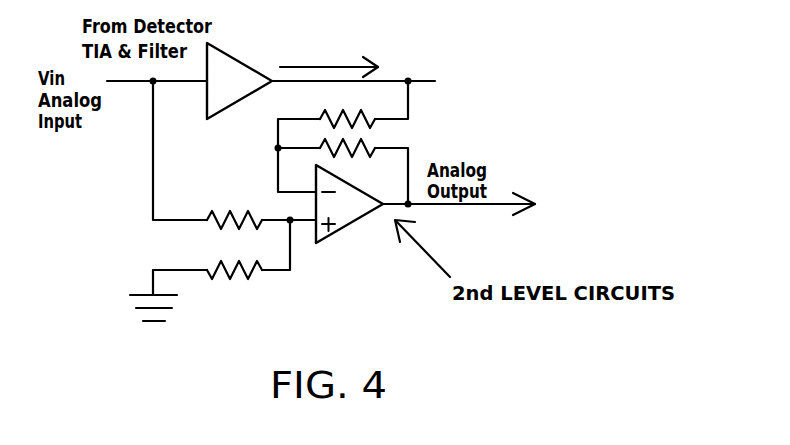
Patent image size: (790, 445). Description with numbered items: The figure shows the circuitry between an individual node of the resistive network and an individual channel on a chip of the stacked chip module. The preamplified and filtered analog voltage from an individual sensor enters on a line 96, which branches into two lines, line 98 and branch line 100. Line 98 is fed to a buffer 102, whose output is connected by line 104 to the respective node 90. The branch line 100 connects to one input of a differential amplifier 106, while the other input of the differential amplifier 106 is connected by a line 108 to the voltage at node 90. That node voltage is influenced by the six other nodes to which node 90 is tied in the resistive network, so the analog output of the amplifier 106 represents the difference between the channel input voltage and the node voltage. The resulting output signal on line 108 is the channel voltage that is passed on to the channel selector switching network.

The node 90 is at (410, 84).
The line 96 is at (130, 83).
The line 98 is at (175, 83).
The branch line 100 is at (178, 223).
The buffer 102 is at (220, 45).
The line 104 is at (388, 80).
The differential amplifier 106 is at (313, 242).
The line 108 is at (273, 131).